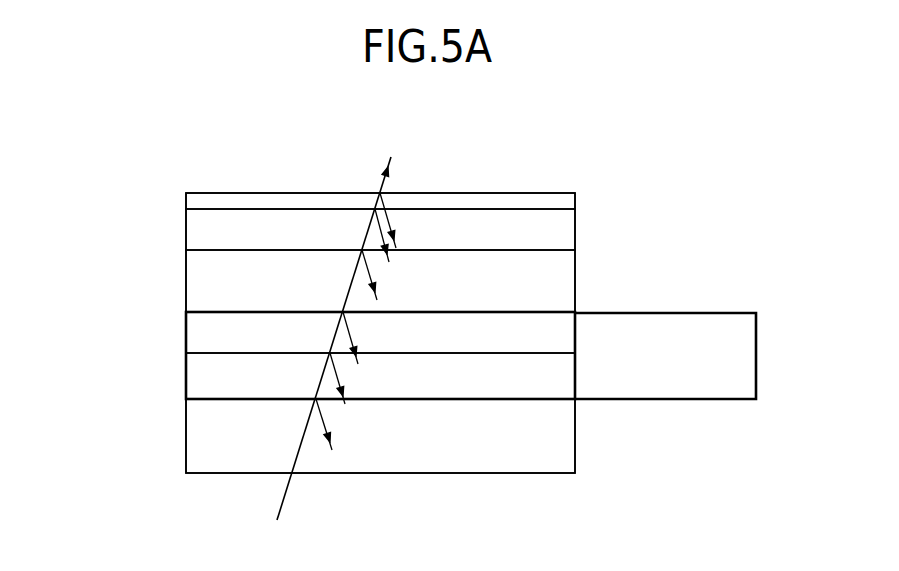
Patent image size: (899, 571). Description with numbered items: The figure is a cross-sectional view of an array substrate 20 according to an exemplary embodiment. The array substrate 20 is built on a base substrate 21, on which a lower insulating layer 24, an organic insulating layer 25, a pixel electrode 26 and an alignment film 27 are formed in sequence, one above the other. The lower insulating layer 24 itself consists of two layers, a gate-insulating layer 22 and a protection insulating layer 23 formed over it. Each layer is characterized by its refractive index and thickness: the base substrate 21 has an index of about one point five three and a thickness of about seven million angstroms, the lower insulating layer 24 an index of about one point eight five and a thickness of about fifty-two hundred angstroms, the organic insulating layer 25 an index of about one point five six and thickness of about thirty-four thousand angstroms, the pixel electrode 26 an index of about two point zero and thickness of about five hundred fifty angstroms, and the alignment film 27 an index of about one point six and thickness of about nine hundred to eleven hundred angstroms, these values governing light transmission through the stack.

The array substrate 20 is at (428, 130).
The base substrate 21 is at (186, 437).
The gate-insulating layer 22 is at (186, 378).
The protection insulating layer 23 is at (186, 332).
The lower insulating layer 24 is at (92, 322).
The organic insulating layer 25 is at (186, 278).
The pixel electrode 26 is at (186, 211).
The alignment film 27 is at (186, 198).